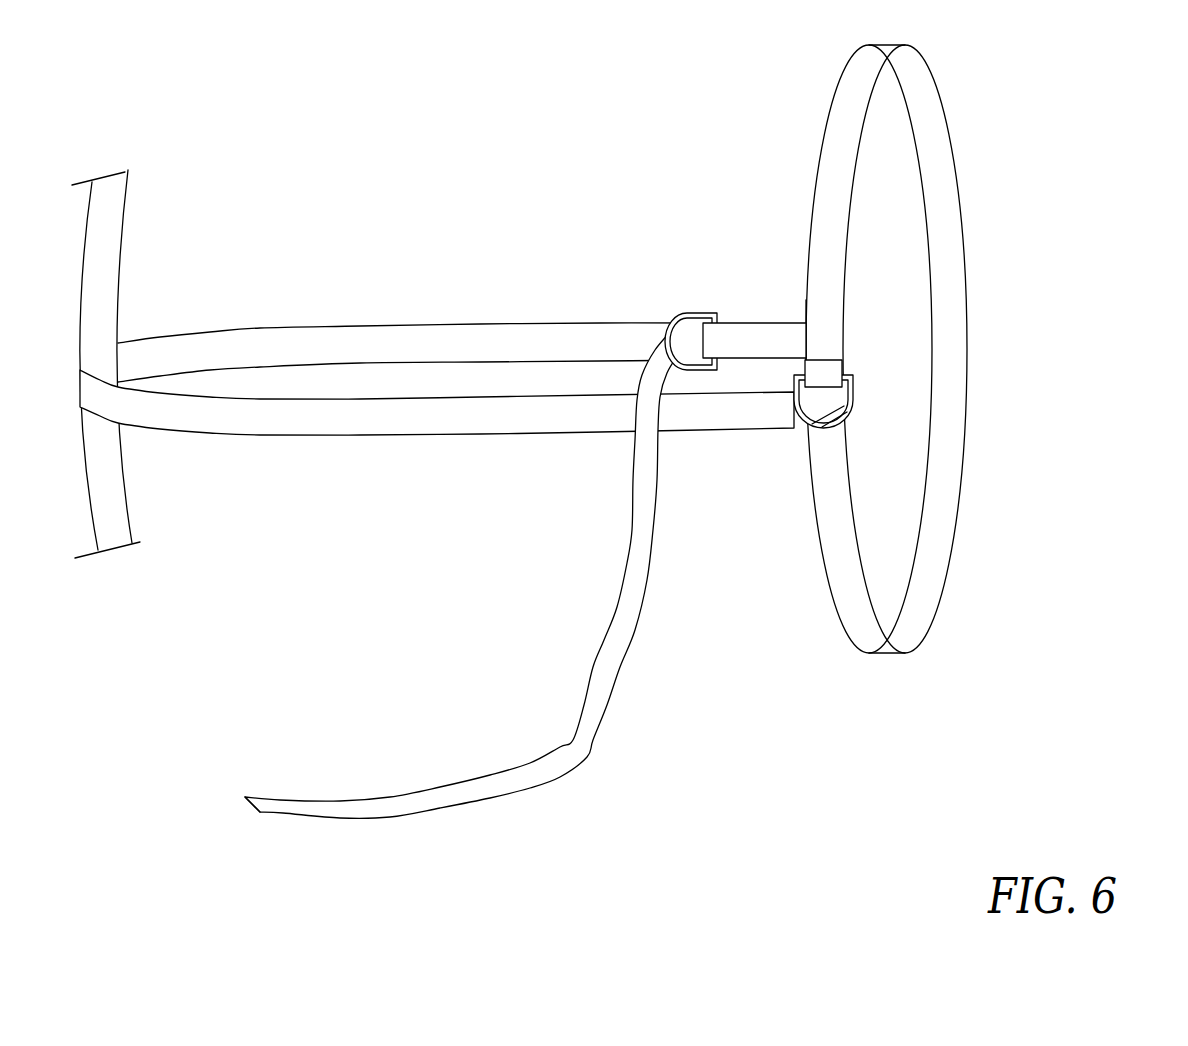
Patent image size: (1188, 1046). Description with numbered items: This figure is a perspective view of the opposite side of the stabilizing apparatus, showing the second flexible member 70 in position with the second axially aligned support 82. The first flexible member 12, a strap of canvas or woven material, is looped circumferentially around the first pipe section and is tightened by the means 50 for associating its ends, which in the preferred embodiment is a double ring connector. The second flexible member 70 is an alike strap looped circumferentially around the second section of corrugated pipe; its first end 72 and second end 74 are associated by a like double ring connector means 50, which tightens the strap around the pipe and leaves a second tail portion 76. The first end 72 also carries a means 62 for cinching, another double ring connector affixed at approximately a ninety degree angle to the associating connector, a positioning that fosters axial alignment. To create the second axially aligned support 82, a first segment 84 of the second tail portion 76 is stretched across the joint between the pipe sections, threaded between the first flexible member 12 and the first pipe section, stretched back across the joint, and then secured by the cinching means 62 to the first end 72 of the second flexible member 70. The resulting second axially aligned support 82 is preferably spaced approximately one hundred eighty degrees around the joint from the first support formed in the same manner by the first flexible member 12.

The first flexible member 12 is at (110, 250).
The means for associating the first end with the second end 50 is at (830, 435).
The means for cinching the second tail portion 62 is at (684, 307).
The second flexible member 70 is at (962, 243).
The first end 72 is at (842, 162).
The second end 74 is at (282, 808).
The second tail portion 76 is at (458, 799).
The second axially aligned support 82 is at (365, 333).
The first segment 84 is at (290, 433).